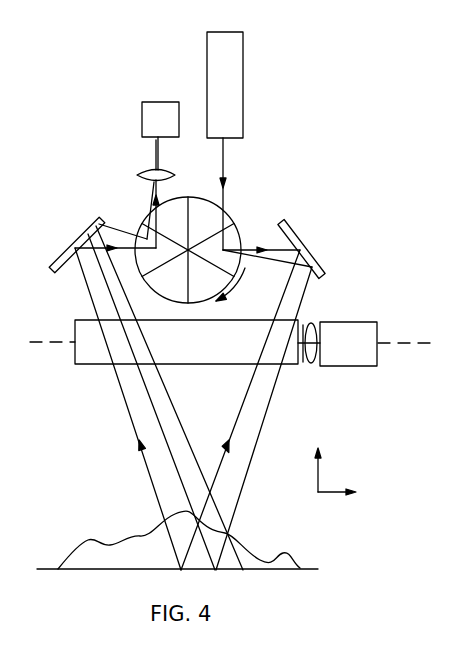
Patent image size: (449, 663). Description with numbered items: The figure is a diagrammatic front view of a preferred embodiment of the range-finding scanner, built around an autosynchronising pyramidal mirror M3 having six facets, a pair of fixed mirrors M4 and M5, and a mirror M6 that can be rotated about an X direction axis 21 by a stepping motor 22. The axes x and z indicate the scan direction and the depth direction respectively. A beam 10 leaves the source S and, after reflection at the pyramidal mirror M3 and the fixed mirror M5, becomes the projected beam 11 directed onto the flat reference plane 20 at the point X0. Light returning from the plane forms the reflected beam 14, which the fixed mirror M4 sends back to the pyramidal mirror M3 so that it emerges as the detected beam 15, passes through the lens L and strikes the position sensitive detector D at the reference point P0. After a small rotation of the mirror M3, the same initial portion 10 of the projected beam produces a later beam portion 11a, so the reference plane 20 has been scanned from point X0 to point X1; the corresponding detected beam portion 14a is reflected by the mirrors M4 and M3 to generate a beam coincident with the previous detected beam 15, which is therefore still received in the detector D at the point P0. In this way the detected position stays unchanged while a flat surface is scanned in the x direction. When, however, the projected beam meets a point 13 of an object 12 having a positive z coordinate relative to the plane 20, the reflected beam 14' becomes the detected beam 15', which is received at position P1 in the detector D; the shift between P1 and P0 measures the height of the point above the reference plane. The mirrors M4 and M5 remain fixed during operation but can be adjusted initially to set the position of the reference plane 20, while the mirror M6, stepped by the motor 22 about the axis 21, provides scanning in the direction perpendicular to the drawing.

The source S is at (225, 85).
The position sensitive detector D is at (160, 119).
The lens L is at (138, 176).
The autosynchronising pyramidal mirror M3 is at (204, 206).
The fixed mirror M4 is at (71, 247).
The fixed mirror M5 is at (304, 246).
The rotatable mirror M6 is at (206, 351).
The reference point P0 is at (156, 145).
The detector position P1 is at (160, 145).
The beam 10 is at (224, 156).
The projected beam 11 is at (270, 248).
The later beam portion 11a is at (272, 262).
The object 12 is at (239, 551).
The point of object 13 is at (228, 532).
The reflected beam 14 is at (128, 407).
The detected beam portion 14a is at (153, 421).
The reflected beam 14' is at (169, 398).
The detected beam 15 is at (167, 214).
The detected beam 15' is at (126, 210).
The reference plane 20 is at (290, 568).
The X direction axis 21 is at (387, 342).
The stepping motor 22 is at (344, 333).
The scan point X0 is at (178, 585).
The scan point X1 is at (213, 585).
The X direction x is at (341, 494).
The Z direction z is at (321, 468).